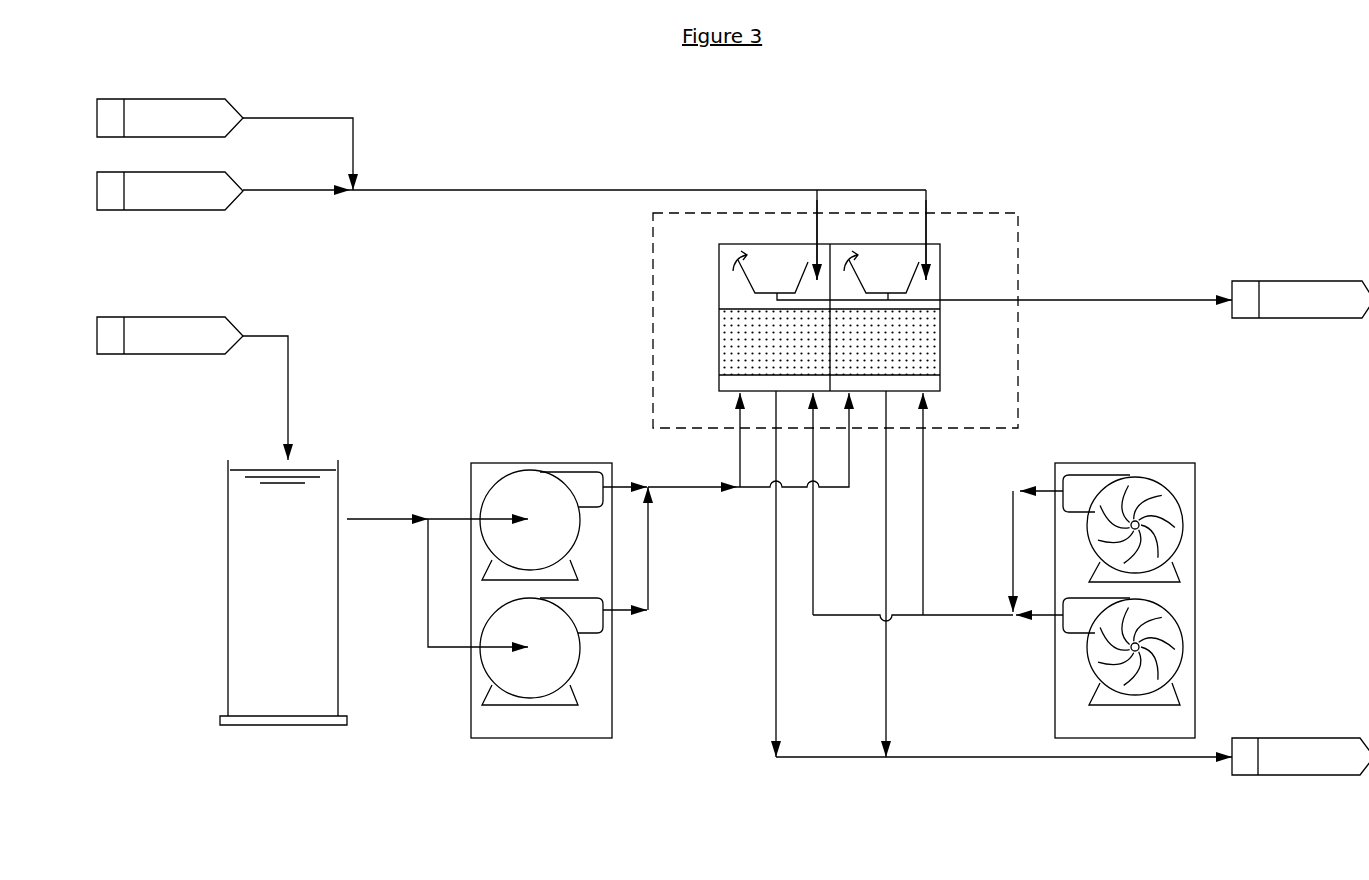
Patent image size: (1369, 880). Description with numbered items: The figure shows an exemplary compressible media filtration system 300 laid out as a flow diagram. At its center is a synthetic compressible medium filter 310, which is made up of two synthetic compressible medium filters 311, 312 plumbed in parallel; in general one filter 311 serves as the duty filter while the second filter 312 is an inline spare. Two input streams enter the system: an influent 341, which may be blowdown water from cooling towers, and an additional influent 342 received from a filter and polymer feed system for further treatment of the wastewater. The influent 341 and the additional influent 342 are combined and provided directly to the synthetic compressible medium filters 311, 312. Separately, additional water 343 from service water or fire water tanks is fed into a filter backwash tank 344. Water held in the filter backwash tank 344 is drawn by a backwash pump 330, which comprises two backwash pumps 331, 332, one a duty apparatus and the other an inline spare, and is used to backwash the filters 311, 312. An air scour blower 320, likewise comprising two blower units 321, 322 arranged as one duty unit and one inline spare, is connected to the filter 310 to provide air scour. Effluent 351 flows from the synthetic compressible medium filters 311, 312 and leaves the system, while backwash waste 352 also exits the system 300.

The system 300 is at (992, 115).
The synthetic compressible medium filter 310 is at (1020, 390).
The synthetic compressible medium filter 311 is at (716, 288).
The synthetic compressible medium filter 312 is at (945, 286).
The air scour blower 320 is at (1137, 600).
The blower unit 321 is at (1183, 496).
The blower unit 322 is at (1183, 619).
The backwash pump 330 is at (537, 600).
The backwash pump 331 is at (563, 525).
The backwash pump 332 is at (563, 651).
The influent 341 is at (225, 144).
The additional influent 342 is at (511, 226).
The additional water 343 is at (192, 388).
The filter backwash tank 344 is at (324, 592).
The effluent 351 is at (1300, 756).
The backwash waste 352 is at (1300, 299).